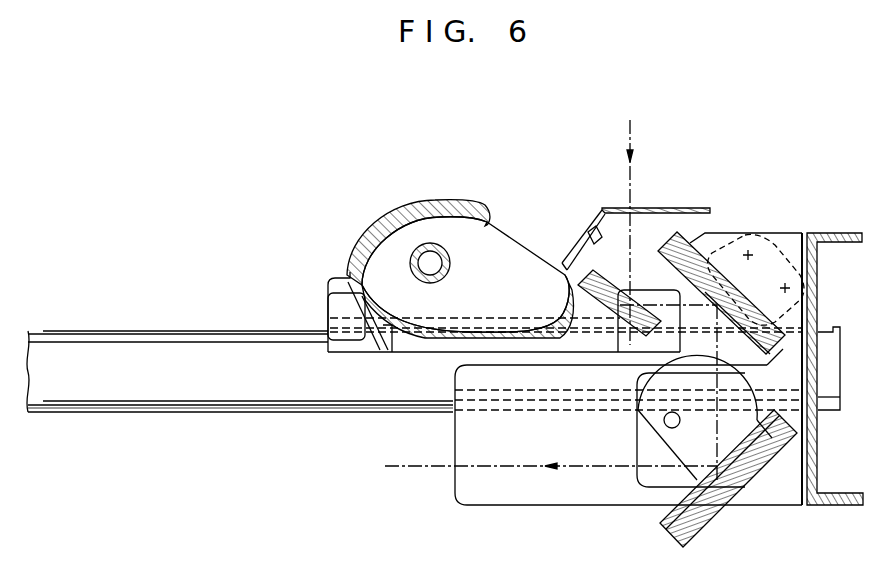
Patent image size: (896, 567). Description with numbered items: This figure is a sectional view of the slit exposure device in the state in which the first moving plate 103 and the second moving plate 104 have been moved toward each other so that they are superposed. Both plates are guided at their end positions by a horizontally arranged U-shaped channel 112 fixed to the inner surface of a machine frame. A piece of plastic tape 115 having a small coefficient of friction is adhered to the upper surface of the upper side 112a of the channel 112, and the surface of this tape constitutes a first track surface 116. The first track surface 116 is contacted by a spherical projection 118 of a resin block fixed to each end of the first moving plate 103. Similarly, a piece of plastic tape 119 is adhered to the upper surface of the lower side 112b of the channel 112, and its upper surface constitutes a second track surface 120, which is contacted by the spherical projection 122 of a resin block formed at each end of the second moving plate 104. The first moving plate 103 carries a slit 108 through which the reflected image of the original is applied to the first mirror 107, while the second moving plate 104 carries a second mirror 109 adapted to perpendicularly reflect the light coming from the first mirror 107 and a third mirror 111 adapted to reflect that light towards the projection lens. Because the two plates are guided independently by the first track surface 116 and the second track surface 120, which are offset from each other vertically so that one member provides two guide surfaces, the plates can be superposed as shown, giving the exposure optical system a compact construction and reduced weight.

The first moving plate 103 is at (563, 290).
The second moving plate 104 is at (577, 505).
The first mirror 107 is at (618, 275).
The slit 108 is at (650, 208).
The second mirror 109 is at (735, 280).
The third mirror 111 is at (738, 492).
The U-shaped channel 112 is at (197, 387).
The upper side of U-shaped channel 112a is at (97, 331).
The lower side of U-shaped channel 112b is at (255, 412).
The plastic tape 115 is at (157, 333).
The first track surface 116 is at (237, 331).
The spherical projection 118 is at (348, 280).
The plastic tape 119 is at (89, 412).
The second track surface 120 is at (142, 402).
The spherical projection 122 is at (483, 393).